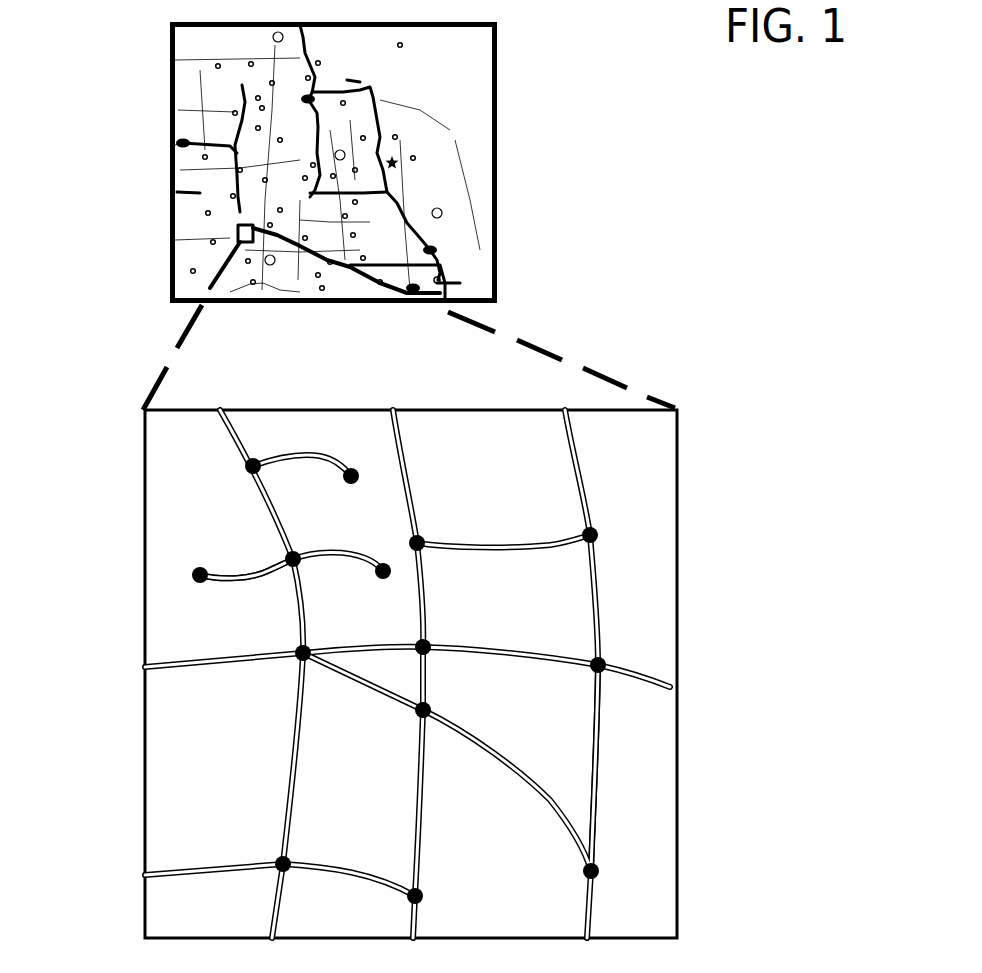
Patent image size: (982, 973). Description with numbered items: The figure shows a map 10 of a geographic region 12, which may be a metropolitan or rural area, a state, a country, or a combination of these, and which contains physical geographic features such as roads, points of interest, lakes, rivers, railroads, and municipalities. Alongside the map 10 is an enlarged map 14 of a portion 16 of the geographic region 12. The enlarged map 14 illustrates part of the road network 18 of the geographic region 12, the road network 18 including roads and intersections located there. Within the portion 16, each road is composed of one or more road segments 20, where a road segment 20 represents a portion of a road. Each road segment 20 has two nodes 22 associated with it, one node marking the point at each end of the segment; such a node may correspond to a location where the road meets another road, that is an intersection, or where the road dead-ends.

The map 10 is at (165, 188).
The geographic region 12 is at (449, 55).
The enlarged map 14 is at (682, 468).
The portion 16 is at (512, 903).
The road network 18 is at (235, 685).
The road segment 20 is at (238, 583).
The node 22 is at (193, 555).